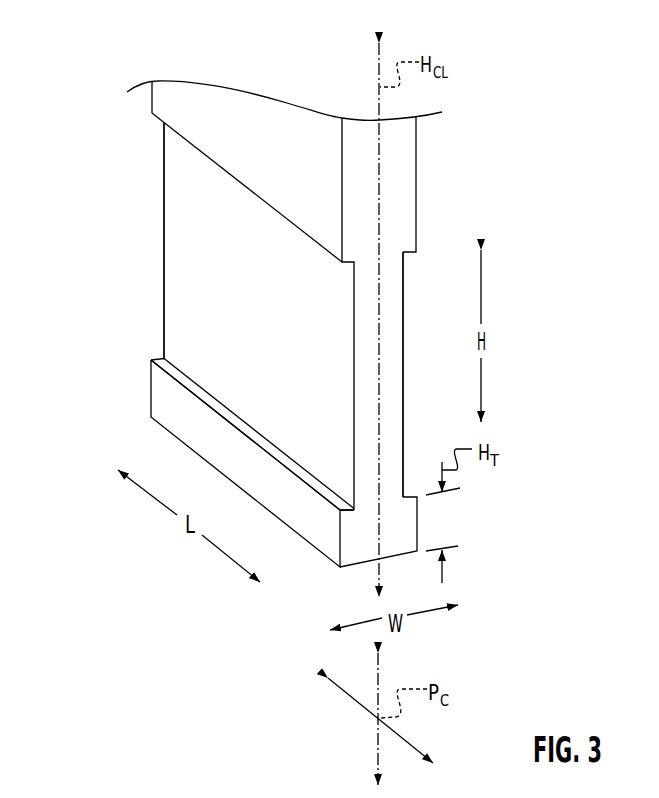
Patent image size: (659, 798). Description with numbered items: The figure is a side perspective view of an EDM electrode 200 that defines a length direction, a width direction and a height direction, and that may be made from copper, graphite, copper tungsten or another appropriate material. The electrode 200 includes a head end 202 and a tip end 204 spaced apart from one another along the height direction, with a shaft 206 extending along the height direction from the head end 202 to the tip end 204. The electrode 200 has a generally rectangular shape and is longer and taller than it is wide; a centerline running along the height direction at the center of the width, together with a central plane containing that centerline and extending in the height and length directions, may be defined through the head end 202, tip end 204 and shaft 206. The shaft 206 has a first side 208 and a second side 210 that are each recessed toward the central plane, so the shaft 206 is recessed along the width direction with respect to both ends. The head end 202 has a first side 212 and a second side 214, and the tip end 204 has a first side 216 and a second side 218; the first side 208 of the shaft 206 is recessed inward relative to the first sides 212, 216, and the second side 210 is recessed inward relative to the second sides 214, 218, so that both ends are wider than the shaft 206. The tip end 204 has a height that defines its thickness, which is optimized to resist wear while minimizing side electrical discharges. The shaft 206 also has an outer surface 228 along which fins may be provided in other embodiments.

The electrode 200 is at (84, 77).
The head end 202 is at (152, 115).
The tip end 204 is at (163, 397).
The shaft 206 is at (177, 220).
The first side 208 is at (189, 267).
The second side 210 is at (404, 388).
The first side 212 is at (306, 212).
The second side 214 is at (418, 211).
The first side 216 is at (253, 467).
The second side 218 is at (420, 516).
The outer surface 228 is at (330, 314).